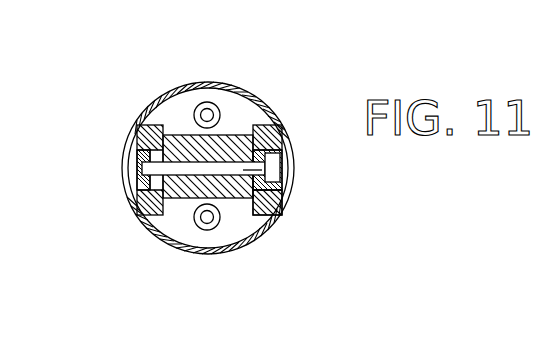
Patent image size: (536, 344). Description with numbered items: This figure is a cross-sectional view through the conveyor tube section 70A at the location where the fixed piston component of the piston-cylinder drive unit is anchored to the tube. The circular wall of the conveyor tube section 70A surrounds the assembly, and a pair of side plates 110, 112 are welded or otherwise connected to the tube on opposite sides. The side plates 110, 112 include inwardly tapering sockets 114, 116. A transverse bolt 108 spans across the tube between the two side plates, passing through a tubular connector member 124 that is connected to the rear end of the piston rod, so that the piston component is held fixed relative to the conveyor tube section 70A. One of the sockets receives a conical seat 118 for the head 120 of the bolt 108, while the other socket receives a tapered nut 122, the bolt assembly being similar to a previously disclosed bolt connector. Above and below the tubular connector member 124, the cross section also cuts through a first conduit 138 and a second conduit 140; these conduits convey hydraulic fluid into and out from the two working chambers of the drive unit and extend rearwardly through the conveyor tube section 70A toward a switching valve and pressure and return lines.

The conveyor tube section 70A is at (260, 237).
The transverse bolt 108 is at (182, 175).
The side plate 110 is at (140, 123).
The side plate 112 is at (273, 123).
The inwardly tapering socket 114 is at (132, 177).
The inwardly tapering socket 116 is at (285, 188).
The conical seat 118 is at (282, 147).
The head of bolt 120 is at (273, 163).
The tapered nut 122 is at (143, 155).
The tubular connector member 124 is at (185, 140).
The first conduit 138 is at (207, 112).
The second conduit 140 is at (207, 232).